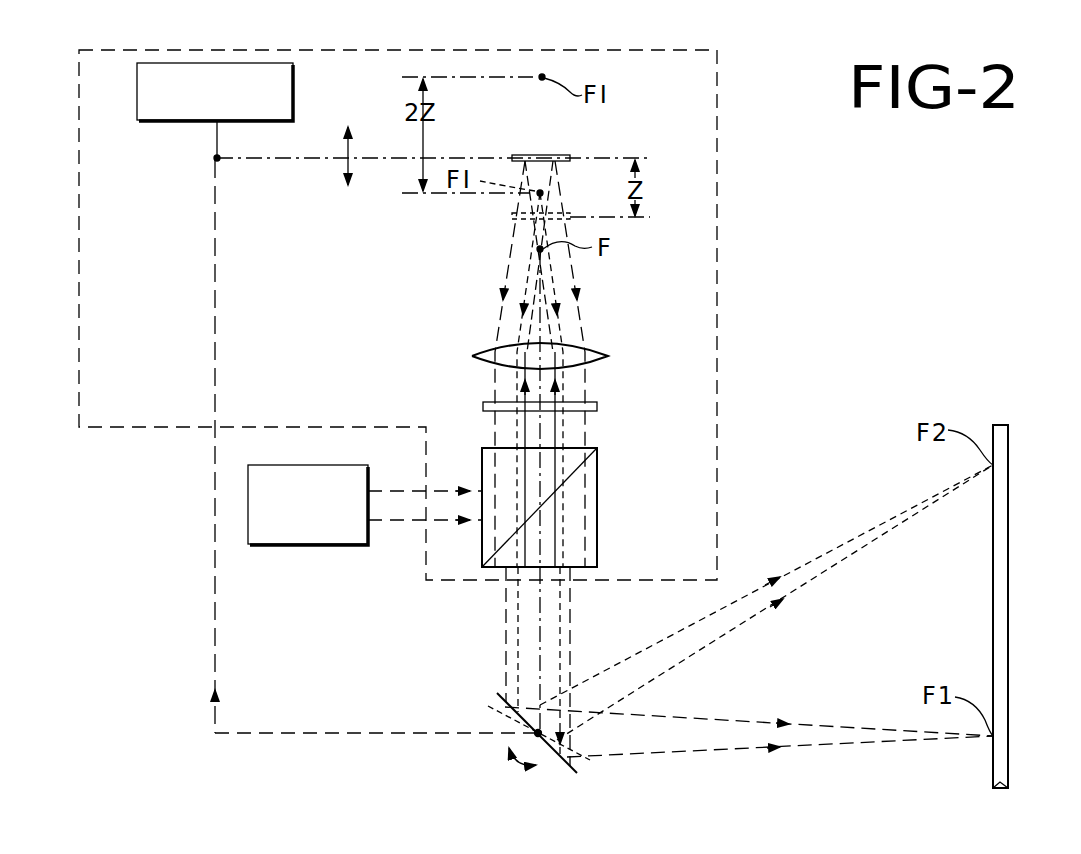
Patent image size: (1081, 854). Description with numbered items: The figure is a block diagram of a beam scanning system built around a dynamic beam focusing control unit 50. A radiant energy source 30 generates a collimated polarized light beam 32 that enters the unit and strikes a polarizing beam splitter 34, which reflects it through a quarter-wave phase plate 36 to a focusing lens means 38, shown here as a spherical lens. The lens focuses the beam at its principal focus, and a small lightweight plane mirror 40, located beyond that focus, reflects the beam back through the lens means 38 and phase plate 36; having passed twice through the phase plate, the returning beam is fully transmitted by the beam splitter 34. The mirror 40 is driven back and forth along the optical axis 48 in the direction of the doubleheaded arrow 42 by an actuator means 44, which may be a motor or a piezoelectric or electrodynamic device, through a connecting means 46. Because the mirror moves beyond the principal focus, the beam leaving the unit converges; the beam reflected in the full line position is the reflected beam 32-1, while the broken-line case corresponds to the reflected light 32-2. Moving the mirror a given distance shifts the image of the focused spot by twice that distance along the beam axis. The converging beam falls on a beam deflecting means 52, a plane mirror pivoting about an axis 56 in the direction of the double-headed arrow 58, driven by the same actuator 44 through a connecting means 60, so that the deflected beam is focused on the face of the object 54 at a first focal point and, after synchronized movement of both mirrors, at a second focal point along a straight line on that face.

The radiant energy source 30 is at (273, 545).
The collimated polarized light beam 32 is at (408, 520).
The reflected beam 32-1 is at (514, 250).
The reflected light 32-2 is at (528, 276).
The polarizing beam splitter 34 is at (597, 462).
The quarter-wave phase plate 36 is at (597, 407).
The focusing lens means 38 is at (608, 356).
The plane mirror 40 is at (528, 155).
The doubleheaded arrow 42 is at (342, 140).
The actuator means 44 is at (150, 121).
The connecting means 46 is at (282, 160).
The optical axis 48 is at (540, 625).
The dynamic beam focusing control unit 50 is at (76, 118).
The beam deflecting means 52 is at (497, 695).
The object 54 is at (1008, 448).
The pivot axis 56 is at (540, 737).
The double-headed arrow 58 is at (520, 763).
The connecting means 60 is at (305, 733).